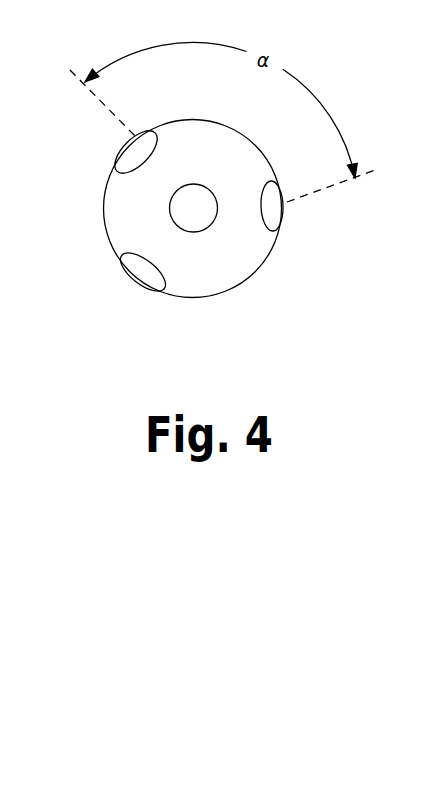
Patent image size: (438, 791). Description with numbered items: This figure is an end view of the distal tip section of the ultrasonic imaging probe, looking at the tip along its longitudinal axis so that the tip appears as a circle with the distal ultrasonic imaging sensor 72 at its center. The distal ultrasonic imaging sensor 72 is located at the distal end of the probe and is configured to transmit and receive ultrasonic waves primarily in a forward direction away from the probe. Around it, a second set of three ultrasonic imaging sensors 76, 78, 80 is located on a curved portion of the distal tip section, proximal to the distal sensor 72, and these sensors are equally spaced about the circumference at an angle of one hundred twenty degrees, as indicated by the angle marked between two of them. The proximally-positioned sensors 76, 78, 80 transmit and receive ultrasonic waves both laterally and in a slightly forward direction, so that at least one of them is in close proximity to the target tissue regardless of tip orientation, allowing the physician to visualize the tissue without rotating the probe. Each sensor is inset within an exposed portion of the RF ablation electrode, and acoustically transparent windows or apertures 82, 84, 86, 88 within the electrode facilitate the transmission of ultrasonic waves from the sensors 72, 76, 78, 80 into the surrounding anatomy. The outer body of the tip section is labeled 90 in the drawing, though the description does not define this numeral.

The distal ultrasonic imaging sensor 72 is at (197, 217).
The ultrasonic imaging sensor 76 is at (137, 148).
The ultrasonic imaging sensor 78 is at (273, 216).
The ultrasonic imaging sensor 80 is at (134, 277).
The acoustically transparent window 82 is at (170, 218).
The acoustically transparent window 84 is at (124, 162).
The acoustically transparent window 86 is at (283, 209).
The acoustically transparent window 88 is at (163, 290).
The disc body 90 is at (250, 258).